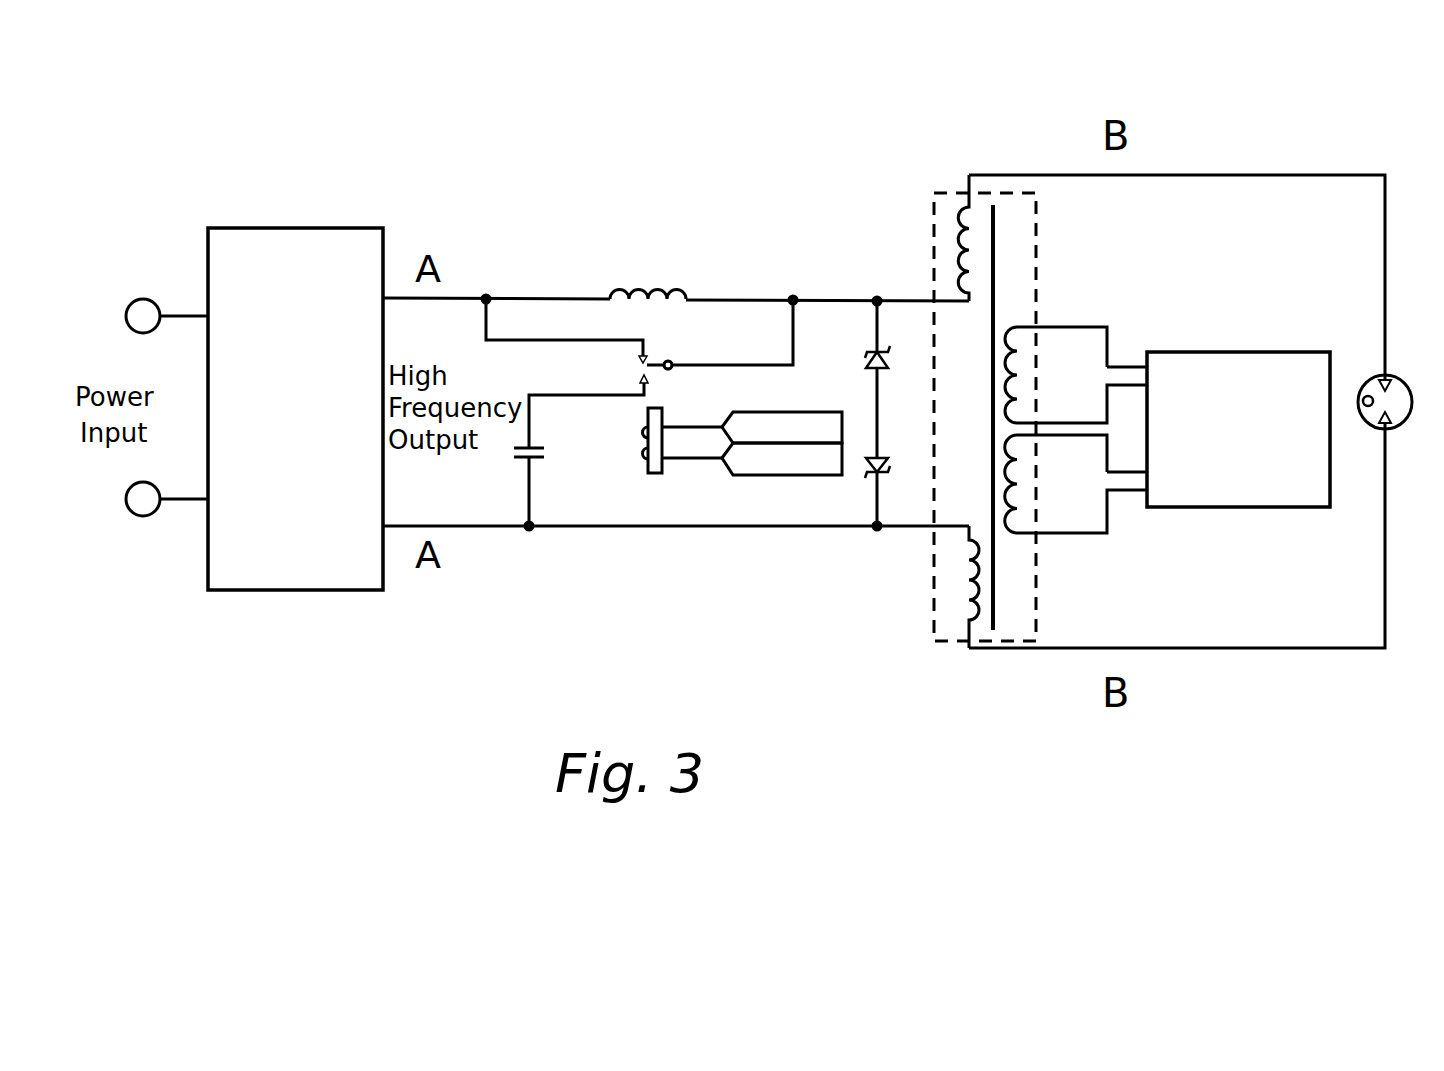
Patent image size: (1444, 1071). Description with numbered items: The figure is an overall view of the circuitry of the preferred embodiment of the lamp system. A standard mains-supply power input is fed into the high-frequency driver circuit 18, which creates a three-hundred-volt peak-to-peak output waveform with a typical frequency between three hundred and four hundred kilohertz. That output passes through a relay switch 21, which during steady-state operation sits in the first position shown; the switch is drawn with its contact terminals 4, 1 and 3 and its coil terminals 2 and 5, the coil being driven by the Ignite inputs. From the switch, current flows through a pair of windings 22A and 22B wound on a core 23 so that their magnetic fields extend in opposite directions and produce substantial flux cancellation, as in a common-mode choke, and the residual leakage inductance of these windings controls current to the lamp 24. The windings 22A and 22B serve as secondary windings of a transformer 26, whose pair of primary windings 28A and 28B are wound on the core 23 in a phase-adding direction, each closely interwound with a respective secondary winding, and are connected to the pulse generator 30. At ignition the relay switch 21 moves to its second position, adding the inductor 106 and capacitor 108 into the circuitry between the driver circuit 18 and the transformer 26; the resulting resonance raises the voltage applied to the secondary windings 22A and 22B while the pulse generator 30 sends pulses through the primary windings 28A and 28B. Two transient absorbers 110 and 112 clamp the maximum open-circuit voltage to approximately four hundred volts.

The high-frequency driver circuit 18 is at (275, 228).
The inductor 106 is at (655, 290).
The relay switch 21 is at (660, 350).
The switch contact 4 is at (566, 331).
The switch pivot terminal 1 is at (684, 354).
The switch contact 3 is at (588, 405).
The relay coil terminal 2 is at (743, 434).
The relay coil terminal 5 is at (743, 453).
The capacitor 108 is at (535, 462).
The transient absorber 110 is at (868, 348).
The transient absorber 112 is at (866, 478).
The transformer 26 is at (982, 195).
The core 23 is at (995, 582).
The secondary winding 22A is at (967, 245).
The secondary winding 22B is at (968, 590).
The primary winding 28A is at (1018, 367).
The primary winding 28B is at (1017, 495).
The pulse generator 30 is at (1250, 352).
The lamp 24 is at (1400, 380).